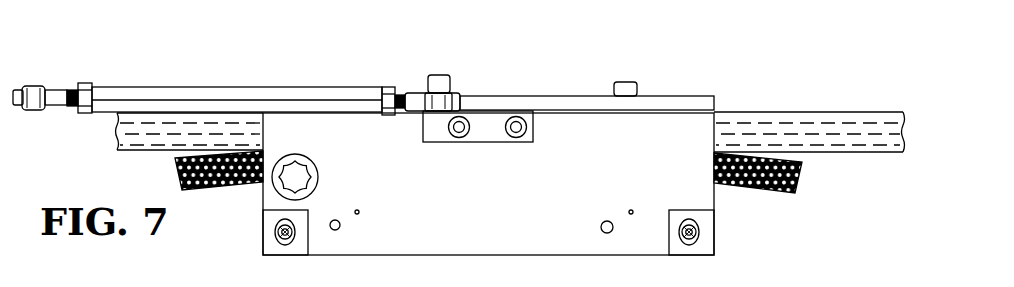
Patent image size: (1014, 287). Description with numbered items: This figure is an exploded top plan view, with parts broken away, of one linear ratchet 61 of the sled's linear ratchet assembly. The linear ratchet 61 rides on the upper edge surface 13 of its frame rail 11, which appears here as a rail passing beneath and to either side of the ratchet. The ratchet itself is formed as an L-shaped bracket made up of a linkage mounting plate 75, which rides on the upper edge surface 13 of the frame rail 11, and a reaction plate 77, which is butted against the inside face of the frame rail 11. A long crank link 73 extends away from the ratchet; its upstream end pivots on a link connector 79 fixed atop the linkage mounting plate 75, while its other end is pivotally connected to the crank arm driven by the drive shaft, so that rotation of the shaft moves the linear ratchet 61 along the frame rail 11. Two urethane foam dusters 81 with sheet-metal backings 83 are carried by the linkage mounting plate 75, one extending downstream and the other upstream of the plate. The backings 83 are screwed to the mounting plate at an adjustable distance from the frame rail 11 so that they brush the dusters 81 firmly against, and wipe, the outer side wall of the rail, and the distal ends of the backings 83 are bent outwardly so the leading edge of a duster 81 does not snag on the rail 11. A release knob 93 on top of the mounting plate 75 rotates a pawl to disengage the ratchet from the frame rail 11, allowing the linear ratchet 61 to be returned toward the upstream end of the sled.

The frame rail 11 is at (836, 110).
The upper edge surface 13 is at (756, 130).
The linear ratchet 61 is at (849, 270).
The crank link 73 is at (138, 86).
The linkage mounting plate 75 is at (487, 256).
The reaction plate 77 is at (663, 96).
The link connector 79 is at (481, 120).
The urethane foam duster 81 is at (175, 173).
The sheet-metal backing 83 is at (233, 183).
The release knob 93 is at (322, 178).